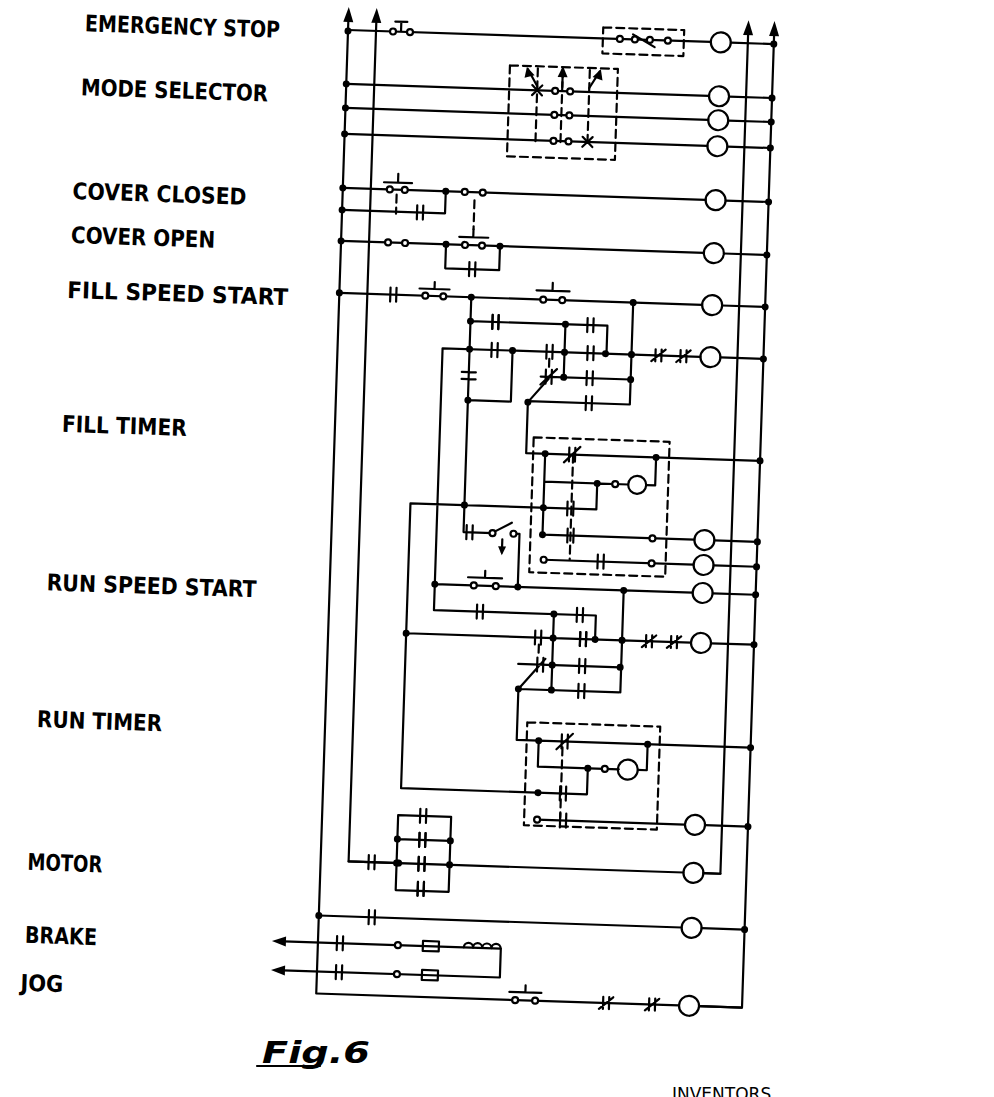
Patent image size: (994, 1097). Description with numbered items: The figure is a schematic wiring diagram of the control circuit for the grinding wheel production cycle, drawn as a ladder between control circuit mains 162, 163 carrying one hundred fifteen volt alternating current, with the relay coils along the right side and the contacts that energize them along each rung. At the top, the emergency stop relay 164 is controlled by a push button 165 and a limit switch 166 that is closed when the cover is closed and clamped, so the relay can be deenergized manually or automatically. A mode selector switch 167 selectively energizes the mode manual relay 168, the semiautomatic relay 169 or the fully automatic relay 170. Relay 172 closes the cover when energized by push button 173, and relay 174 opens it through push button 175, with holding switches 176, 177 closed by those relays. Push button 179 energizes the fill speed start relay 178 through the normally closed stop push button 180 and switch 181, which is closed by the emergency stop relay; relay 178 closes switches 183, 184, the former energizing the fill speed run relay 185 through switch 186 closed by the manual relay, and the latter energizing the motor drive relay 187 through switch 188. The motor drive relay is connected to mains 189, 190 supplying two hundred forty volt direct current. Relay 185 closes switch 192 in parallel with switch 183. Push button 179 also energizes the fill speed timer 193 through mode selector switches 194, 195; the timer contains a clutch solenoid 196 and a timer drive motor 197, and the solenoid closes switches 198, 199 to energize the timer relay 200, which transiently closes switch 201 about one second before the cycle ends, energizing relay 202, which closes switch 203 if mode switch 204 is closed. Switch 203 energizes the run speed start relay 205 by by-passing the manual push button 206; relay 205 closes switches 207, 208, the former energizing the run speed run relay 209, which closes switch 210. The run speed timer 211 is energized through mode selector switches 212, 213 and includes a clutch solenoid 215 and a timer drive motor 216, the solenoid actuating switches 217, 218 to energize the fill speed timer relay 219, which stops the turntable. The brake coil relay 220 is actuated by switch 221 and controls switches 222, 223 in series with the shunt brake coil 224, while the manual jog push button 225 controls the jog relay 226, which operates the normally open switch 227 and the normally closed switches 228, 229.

The control circuit main 162 is at (345, 163).
The control circuit main 163 is at (776, 170).
The emergency stop relay 164 is at (716, 40).
The push button 165 is at (403, 36).
The limit switch 166 is at (634, 20).
The mode selector switch 167 is at (620, 146).
The mode manual relay 168 is at (711, 87).
The semiautomatic relay 169 is at (711, 111).
The fully automatic relay 170 is at (717, 143).
The relay 172 is at (711, 193).
The push button 173 is at (408, 171).
The relay 174 is at (711, 246).
The push button 175 is at (490, 216).
The holding switch 176 is at (428, 218).
The holding switch 177 is at (488, 271).
The fill speed start relay 178 is at (711, 299).
The push button 179 is at (570, 283).
The stop push button 180 is at (445, 300).
The switch 181 is at (402, 302).
The switch 183 is at (602, 315).
The switch 184 is at (455, 836).
The fill speed run relay 185 is at (718, 356).
The switch 186 is at (507, 318).
The motor drive relay 187 is at (712, 867).
The switch 188 is at (350, 873).
The main 189 is at (346, 770).
The main 190 is at (750, 772).
The switch 192 is at (601, 353).
The fill speed timer 193 is at (650, 430).
The mode selector switch 194 is at (604, 377).
The mode selector switch 195 is at (603, 401).
The clutch solenoid 196 is at (592, 450).
The timer drive motor 197 is at (648, 486).
The switch 198 is at (592, 506).
The switch 199 is at (590, 534).
The timer relay 200 is at (710, 520).
The switch 201 is at (625, 550).
The relay 202 is at (710, 559).
The switch 203 is at (526, 522).
The mode switch 204 is at (486, 536).
The run speed start relay 205 is at (710, 588).
The manual push button 206 is at (508, 606).
The switch 207 is at (602, 605).
The switch 208 is at (458, 864).
The run speed run relay 209 is at (718, 642).
The switch 210 is at (608, 638).
The run speed timer 211 is at (656, 716).
The mode selector switch 212 is at (608, 662).
The mode selector switch 213 is at (608, 687).
The clutch solenoid 215 is at (596, 738).
The timer drive motor 216 is at (650, 770).
The switch 217 is at (593, 789).
The switch 218 is at (592, 822).
The fill speed timer relay 219 is at (714, 824).
The brake coil relay 220 is at (712, 919).
The switch 221 is at (405, 921).
The switch 222 is at (374, 950).
The switch 223 is at (374, 978).
The shunt brake coil 224 is at (535, 944).
The manual jog push button 225 is at (558, 1002).
The jog relay 226 is at (714, 1004).
The normally open switch 227 is at (455, 892).
The switch 228 is at (676, 352).
The switch 229 is at (672, 638).